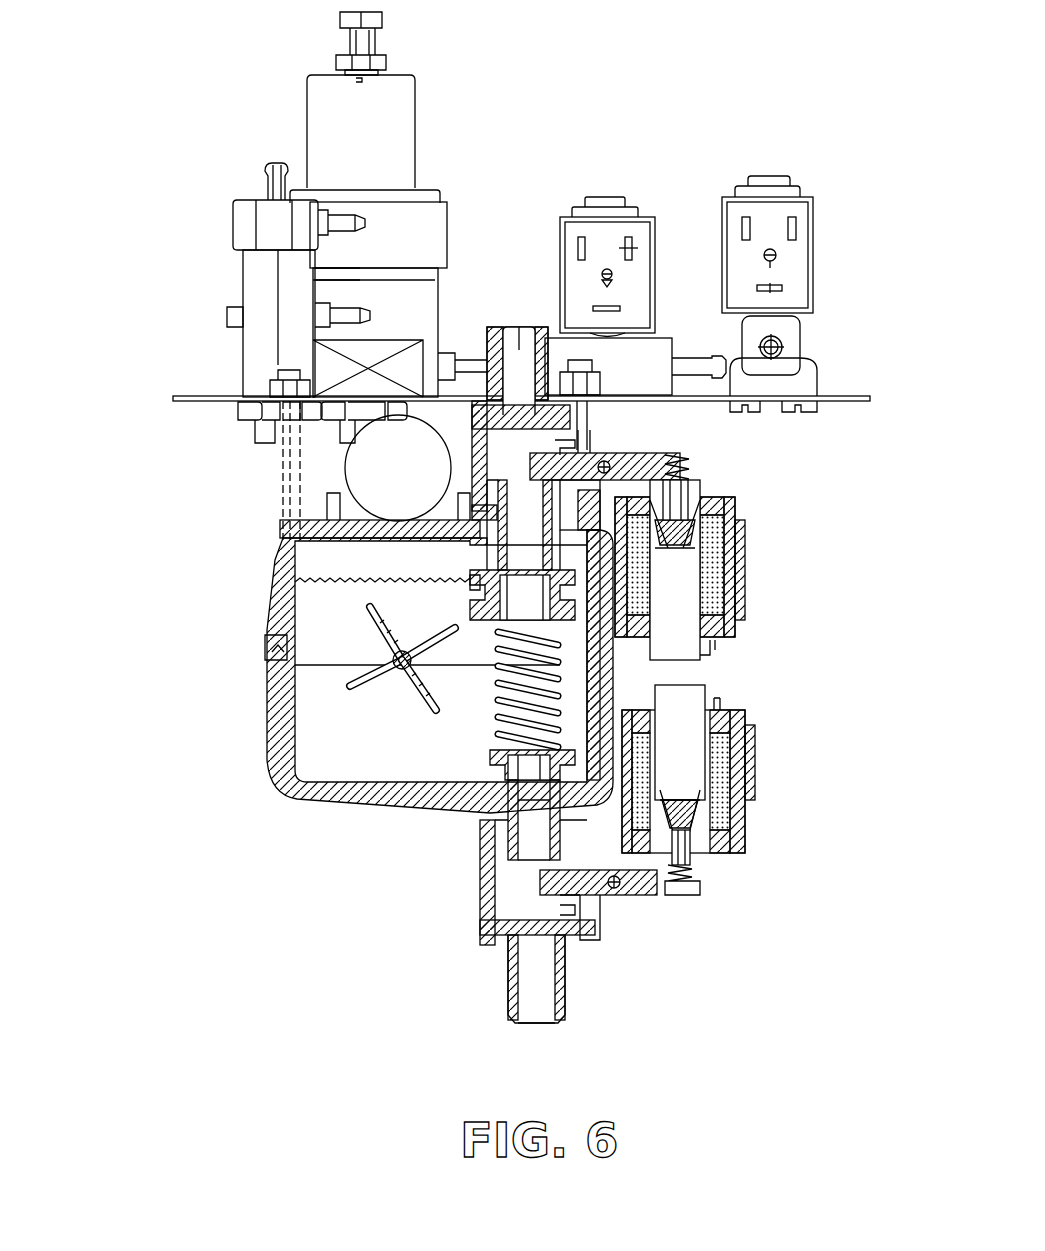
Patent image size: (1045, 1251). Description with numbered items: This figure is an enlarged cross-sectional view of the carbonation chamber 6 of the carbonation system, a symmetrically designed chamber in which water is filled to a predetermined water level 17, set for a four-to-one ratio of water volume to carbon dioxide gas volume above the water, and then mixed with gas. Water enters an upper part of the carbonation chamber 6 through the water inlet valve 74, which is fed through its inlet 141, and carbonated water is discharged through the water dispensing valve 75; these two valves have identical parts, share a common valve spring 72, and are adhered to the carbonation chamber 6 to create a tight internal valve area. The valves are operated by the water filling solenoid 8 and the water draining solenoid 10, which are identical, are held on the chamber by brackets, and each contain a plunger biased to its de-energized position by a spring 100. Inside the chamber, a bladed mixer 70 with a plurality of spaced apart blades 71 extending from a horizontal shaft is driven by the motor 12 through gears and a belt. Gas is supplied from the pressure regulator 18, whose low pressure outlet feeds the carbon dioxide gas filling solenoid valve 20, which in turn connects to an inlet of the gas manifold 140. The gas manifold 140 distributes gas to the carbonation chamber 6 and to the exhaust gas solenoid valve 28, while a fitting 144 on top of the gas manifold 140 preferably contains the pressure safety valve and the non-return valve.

The carbonation chamber 6 is at (421, 712).
The water filling solenoid 8 is at (712, 553).
The water draining solenoid 10 is at (715, 752).
The motor 12 is at (355, 468).
The predetermined water level 17 is at (302, 586).
The pressure regulator 18 is at (388, 112).
The carbon dioxide gas filling solenoid valve 20 is at (637, 232).
The exhaust gas solenoid valve 28 is at (800, 210).
The bladed mixer 70 is at (382, 688).
The blades 71 is at (357, 690).
The valve spring 72 is at (498, 684).
The water inlet valve 74 is at (466, 580).
The water dispensing valve 75 is at (492, 757).
The spring 100 is at (688, 468).
The gas manifold 140 is at (258, 348).
The inlet 141 is at (520, 345).
The fitting 144 is at (245, 229).